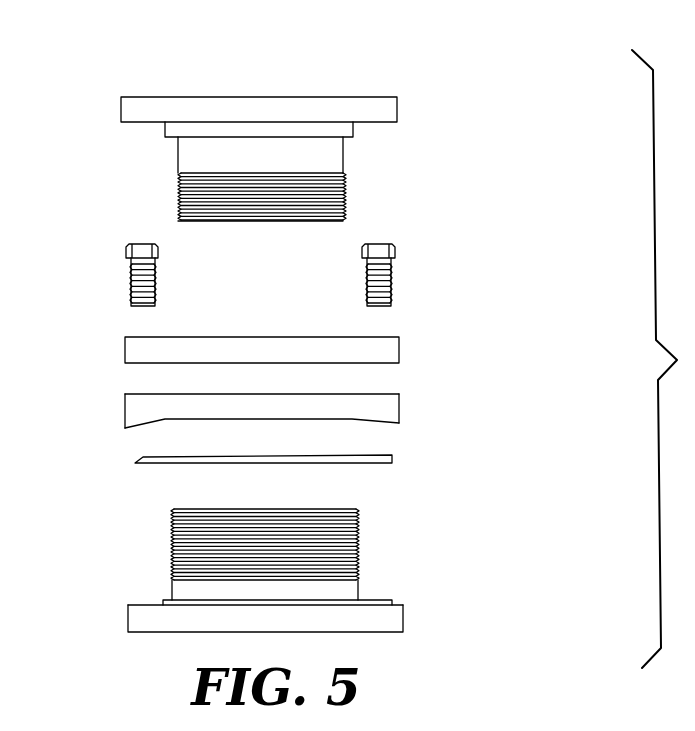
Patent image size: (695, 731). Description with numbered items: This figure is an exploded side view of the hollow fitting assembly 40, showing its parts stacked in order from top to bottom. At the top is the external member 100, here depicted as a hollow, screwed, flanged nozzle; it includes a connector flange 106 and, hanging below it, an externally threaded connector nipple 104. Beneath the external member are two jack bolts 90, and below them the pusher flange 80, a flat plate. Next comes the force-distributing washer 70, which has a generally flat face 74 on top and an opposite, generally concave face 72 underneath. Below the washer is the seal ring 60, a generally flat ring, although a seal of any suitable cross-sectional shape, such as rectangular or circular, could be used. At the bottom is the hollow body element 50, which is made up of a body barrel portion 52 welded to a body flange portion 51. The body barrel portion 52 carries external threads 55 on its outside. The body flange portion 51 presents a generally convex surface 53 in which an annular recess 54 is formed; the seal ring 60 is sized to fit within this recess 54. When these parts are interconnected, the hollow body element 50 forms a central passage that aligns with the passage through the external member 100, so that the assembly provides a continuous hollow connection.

The hollow fitting assembly 40 is at (518, 248).
The hollow body element 50 is at (362, 585).
The body flange portion 51 is at (382, 618).
The body barrel portion 52 is at (355, 507).
The generally convex surface 53 is at (385, 603).
The annular recess 54 is at (153, 605).
The external threads 55 is at (172, 545).
The seal ring 60 is at (395, 456).
The force-distributing washer 70 is at (405, 400).
The generally concave face 72 is at (148, 425).
The generally flat face 74 is at (142, 394).
The pusher flange 80 is at (404, 340).
The jack bolts 90 is at (125, 248).
The external member 100 is at (402, 98).
The externally threaded connector nipple 104 is at (343, 192).
The connector flange 106 is at (373, 108).